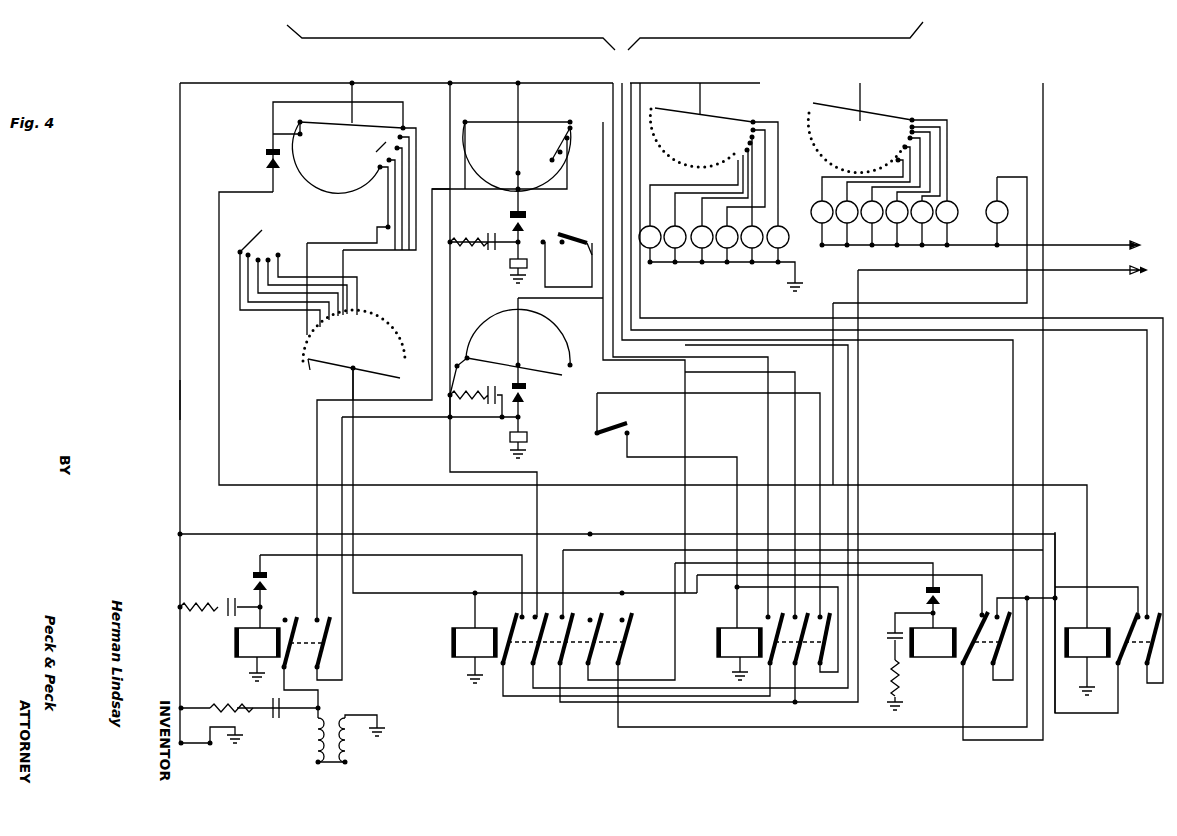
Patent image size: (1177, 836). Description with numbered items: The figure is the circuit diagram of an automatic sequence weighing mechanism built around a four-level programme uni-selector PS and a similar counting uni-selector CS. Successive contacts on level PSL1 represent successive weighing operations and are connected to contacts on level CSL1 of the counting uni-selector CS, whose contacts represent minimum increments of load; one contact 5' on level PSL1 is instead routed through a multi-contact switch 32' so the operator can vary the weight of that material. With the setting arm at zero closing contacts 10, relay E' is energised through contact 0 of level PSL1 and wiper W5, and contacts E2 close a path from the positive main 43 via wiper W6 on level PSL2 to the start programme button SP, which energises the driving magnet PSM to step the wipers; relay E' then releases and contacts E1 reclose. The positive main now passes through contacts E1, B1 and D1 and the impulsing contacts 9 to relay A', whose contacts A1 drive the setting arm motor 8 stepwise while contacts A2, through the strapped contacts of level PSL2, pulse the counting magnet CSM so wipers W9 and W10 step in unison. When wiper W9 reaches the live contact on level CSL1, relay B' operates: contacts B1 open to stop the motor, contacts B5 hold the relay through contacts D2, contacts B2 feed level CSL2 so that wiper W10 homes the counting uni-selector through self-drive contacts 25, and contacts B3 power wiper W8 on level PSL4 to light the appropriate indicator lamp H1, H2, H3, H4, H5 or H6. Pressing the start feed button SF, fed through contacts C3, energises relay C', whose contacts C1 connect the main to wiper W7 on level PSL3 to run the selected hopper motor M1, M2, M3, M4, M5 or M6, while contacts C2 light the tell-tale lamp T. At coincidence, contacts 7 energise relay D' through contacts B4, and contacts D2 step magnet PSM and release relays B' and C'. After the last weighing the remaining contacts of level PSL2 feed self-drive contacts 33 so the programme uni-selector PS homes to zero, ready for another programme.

The programme uni-selector switch PS is at (605, 36).
The wiper arm of level PSL1 W5 is at (372, 120).
The contact No. 0 is at (458, 345).
The contact No. 5' is at (384, 142).
The zero contacts 10 is at (282, 165).
The multi-contact switch 32' is at (298, 282).
The first level of programme uni-selector PSL1 is at (338, 147).
The first level of counting uni-selector CSL1 is at (354, 344).
The counting uni-selector switch CS is at (465, 368).
The wiper of level CSL1 W9 is at (356, 373).
The wiper of level PSL2 W6 is at (530, 124).
The second level of programme uni-selector PSL2 is at (518, 156).
The self-drive contacts of programme uni-selector 33 is at (526, 226).
The start programme button SP is at (560, 232).
The programme uni-selector driving magnet PSM is at (510, 273).
The wiper of level PSL3 W7 is at (730, 111).
The third level of programme uni-selector PSL3 is at (702, 137).
The hopper control motor winding M1 is at (779, 240).
The hopper control motor M2 is at (752, 264).
The hopper control motor M3 is at (727, 264).
The hopper control motor M4 is at (702, 264).
The hopper control motor M5 is at (675, 264).
The hopper control motor M6 is at (655, 228).
The wiper of level PSL4 W8 is at (877, 114).
The fourth level of programme uni-selector PSL4 is at (861, 138).
The tell-tale lamp T is at (1002, 215).
The indicator lamp H1 is at (947, 248).
The indicator lamp H2 is at (922, 248).
The indicator lamp H3 is at (897, 248).
The indicator lamp H4 is at (872, 248).
The indicator lamp H5 is at (847, 248).
The indicator lamp H6 is at (822, 248).
The second level of counting uni-selector CSL2 is at (514, 342).
The wiper of level CSL2 W10 is at (506, 370).
The self-drive contacts of counting uni-selector 25 is at (527, 395).
The counting uni-selector driving magnet CSM is at (528, 437).
The start feed button SF is at (628, 424).
The positive main 43 is at (180, 394).
The impulsing contacts 9 is at (252, 581).
The relay A' contacts A1 is at (287, 618).
The relay A' contacts A2 is at (320, 618).
The impulsing relay A' is at (229, 643).
The setting arm driving motor 8 is at (332, 765).
The normally closed relay B' contacts B1 is at (512, 617).
The relay B' contacts B2 is at (537, 615).
The relay B' contacts B3 is at (564, 615).
The relay B' contacts B4 is at (592, 617).
The relay B' contacts B5 is at (624, 617).
The weight-reached relay B' is at (455, 642).
The relay C' contacts C1 is at (774, 607).
The relay C' contacts C2 is at (801, 607).
The make-before-break relay C' contacts C3 is at (822, 615).
The feed relay C' is at (734, 640).
The coincidence contacts 7 is at (936, 592).
The normally closed relay D' contacts D1 is at (980, 615).
The make-before-break relay D' contacts D2 is at (996, 614).
The coincidence relay D' is at (933, 653).
The relay E' contacts E1 is at (1132, 612).
The relay E' contacts E2 is at (1150, 646).
The zero-position relay E' is at (1085, 661).